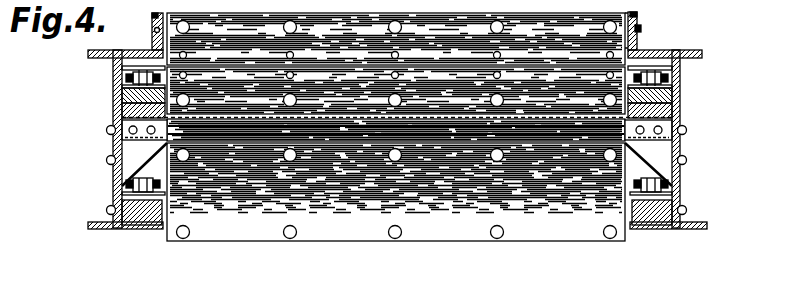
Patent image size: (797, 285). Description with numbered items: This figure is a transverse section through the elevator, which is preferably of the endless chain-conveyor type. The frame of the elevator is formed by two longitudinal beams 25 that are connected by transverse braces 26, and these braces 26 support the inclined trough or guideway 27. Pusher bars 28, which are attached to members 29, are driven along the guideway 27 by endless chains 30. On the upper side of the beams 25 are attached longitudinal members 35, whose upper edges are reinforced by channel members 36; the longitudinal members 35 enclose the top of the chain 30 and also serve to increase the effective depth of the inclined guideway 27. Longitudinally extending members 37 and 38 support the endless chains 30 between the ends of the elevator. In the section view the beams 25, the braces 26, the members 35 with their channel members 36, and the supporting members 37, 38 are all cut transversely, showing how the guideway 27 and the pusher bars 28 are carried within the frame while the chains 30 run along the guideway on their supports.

The longitudinal beam 25 is at (115, 148).
The transverse brace 26 is at (683, 142).
The inclined trough or guideway 27 is at (553, 114).
The pusher bar 28 is at (612, 266).
The member 29 is at (620, 54).
The endless chain 30 is at (113, 183).
The longitudinal member 35 is at (90, 51).
The channel member 36 is at (151, 16).
The longitudinally extending member 37 is at (127, 230).
The longitudinally extending member 38 is at (117, 111).